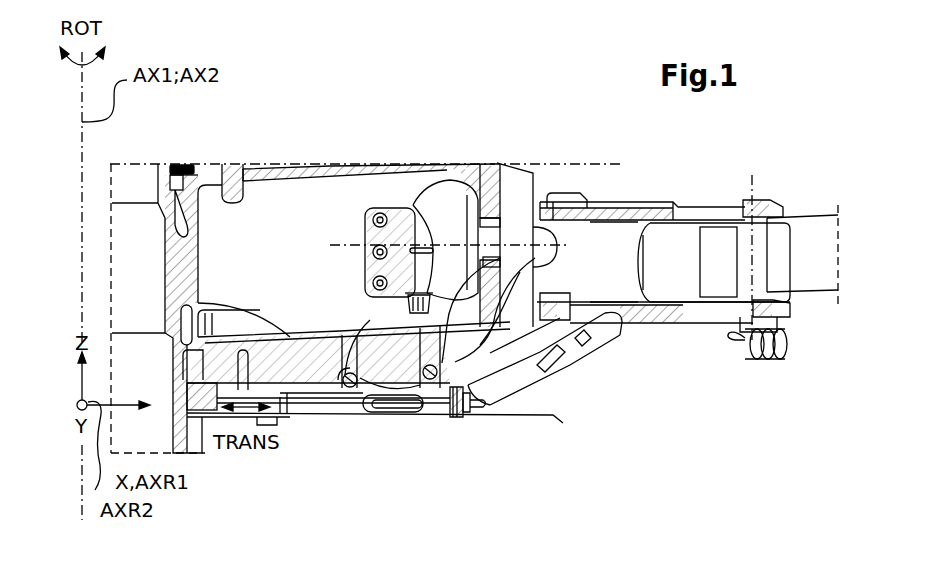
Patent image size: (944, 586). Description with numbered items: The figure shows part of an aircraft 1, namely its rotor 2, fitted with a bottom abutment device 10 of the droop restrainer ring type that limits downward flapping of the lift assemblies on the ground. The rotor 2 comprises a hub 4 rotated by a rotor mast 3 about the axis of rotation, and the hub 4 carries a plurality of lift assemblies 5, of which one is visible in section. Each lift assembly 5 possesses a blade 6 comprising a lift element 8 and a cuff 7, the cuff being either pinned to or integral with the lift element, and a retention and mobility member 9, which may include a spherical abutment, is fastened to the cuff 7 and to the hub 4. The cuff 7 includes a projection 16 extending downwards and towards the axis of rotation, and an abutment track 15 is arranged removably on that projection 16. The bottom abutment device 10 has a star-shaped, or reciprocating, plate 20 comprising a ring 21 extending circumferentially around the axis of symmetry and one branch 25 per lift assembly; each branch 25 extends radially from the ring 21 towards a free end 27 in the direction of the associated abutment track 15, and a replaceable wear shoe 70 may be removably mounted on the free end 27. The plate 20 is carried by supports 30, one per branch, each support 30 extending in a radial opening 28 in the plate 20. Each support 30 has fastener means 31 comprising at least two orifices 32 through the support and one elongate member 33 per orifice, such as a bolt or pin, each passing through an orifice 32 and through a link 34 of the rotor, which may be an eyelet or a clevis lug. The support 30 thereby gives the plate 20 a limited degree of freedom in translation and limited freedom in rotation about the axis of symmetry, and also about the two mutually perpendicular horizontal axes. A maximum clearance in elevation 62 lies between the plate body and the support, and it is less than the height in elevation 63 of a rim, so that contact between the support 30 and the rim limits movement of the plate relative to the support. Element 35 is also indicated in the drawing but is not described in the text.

The aircraft 1 is at (350, 511).
The rotor 2 is at (528, 130).
The rotor mast 3 is at (163, 163).
The hub 4 is at (300, 175).
The lift assembly 5 is at (754, 418).
The blade 6 is at (791, 372).
The cuff 7 is at (670, 310).
The lift element 8 is at (818, 215).
The retention and mobility member 9 is at (345, 245).
The bottom abutment device 10 is at (410, 456).
The abutment track 15 is at (467, 393).
The projection 16 is at (560, 380).
The star-shaped plate 20 is at (295, 453).
The ring 21 is at (293, 390).
The branch 25 is at (428, 425).
The free end 27 is at (445, 417).
The radial opening 28 is at (198, 305).
The support 30 is at (402, 375).
The fastener means 31 is at (320, 413).
The orifice 32 is at (535, 271).
The elongate member 33 is at (555, 245).
The link 34 is at (353, 350).
The slider rod 35 is at (383, 413).
The maximum clearance in elevation 62 is at (347, 445).
The height in elevation 63 is at (560, 388).
The wear shoe 70 is at (555, 338).